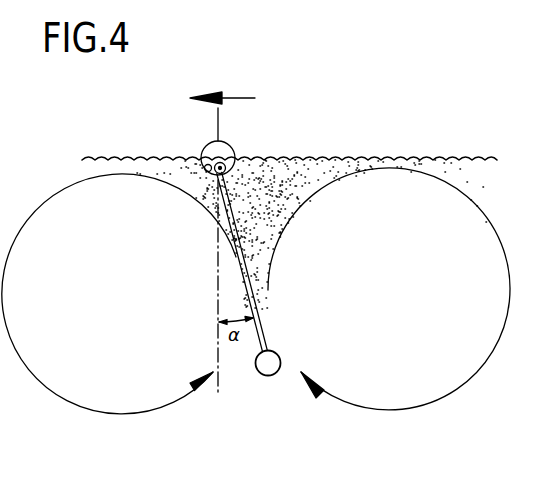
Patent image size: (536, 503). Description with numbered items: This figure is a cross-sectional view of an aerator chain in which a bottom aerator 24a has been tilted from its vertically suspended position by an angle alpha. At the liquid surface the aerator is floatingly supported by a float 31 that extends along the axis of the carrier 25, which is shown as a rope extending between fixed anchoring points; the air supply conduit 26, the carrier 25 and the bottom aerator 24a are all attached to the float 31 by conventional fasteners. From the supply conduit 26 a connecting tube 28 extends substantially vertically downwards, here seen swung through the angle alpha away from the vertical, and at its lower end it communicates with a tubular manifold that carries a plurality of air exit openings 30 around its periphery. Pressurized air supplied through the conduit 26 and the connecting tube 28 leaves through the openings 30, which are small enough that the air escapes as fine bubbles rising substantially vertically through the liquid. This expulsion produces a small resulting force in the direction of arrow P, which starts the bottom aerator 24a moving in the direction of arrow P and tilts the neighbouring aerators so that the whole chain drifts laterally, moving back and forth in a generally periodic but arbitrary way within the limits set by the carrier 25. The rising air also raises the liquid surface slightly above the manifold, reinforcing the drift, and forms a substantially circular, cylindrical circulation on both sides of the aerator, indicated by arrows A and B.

The float 31 is at (222, 156).
The carrier 25 is at (206, 171).
The air supply conduit 26 is at (216, 174).
The connecting tube 28 is at (248, 262).
The air exit openings 30 is at (279, 356).
The bottom aerator 24a is at (216, 277).
The arrow A is at (441, 404).
The arrow B is at (100, 414).
The arrow P is at (213, 114).